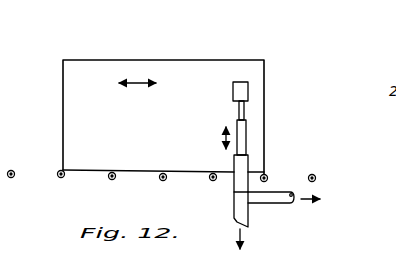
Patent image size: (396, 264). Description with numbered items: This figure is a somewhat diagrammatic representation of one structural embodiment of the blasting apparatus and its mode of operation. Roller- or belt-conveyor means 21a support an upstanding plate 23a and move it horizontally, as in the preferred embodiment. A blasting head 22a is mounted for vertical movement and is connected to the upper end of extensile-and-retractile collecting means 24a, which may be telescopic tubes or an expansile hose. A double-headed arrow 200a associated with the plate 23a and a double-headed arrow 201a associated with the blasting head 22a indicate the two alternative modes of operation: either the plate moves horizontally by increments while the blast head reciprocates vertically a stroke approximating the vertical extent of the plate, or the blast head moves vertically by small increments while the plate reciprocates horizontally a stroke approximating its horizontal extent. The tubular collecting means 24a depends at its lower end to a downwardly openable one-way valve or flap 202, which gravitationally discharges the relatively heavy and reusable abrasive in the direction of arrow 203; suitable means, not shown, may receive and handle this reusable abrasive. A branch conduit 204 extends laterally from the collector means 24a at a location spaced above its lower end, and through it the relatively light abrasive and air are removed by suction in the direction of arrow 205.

The upstanding plate 23a is at (140, 66).
The double-headed arrow 200a is at (136, 84).
The blasting head 22a is at (247, 91).
The extensile-and-retractile collecting means 24a is at (246, 129).
The double-headed arrow 201a is at (225, 140).
The one-way valve or flap 202 is at (240, 224).
The branch conduit 204 is at (279, 191).
The roller- or belt-conveyor means 21a is at (315, 175).
The arrow 205 is at (309, 199).
The arrow 203 is at (243, 240).